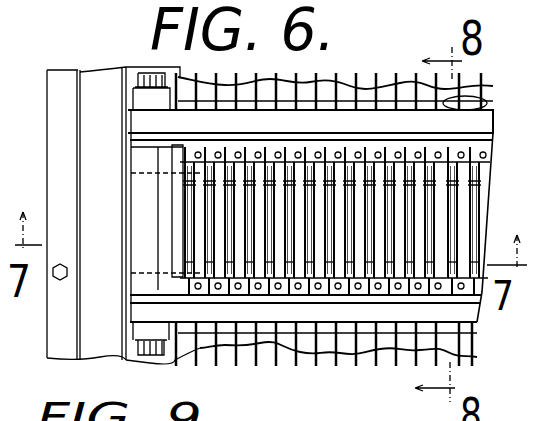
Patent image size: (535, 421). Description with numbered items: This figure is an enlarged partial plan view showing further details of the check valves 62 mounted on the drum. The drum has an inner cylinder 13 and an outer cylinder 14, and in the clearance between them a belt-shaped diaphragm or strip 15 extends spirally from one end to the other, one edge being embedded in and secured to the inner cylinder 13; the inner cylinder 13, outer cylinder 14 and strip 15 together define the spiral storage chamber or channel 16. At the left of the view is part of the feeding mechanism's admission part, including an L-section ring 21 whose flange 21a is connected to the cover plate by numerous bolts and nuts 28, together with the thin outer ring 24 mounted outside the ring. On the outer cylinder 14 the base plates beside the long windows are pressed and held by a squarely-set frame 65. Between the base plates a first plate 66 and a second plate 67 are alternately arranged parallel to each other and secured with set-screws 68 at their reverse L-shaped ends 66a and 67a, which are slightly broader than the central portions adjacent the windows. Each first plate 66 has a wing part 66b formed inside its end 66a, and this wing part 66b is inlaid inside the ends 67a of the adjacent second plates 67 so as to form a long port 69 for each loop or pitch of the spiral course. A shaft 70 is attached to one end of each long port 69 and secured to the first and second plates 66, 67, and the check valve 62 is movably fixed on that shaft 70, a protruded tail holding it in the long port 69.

The L-section ring 21 is at (78, 97).
The flange of L-section ring 21a is at (48, 128).
The thin outer ring 24 is at (93, 77).
The storage chamber or channel 16 is at (300, 88).
The outer cylinder 14 is at (347, 103).
The inner cylinder 13 is at (467, 90).
The belt-shaped diaphragm or strip 15 is at (448, 102).
The squarely-set frame 65 is at (383, 118).
The reverse L-shaped end of first plate 66a is at (199, 150).
The reverse L-shaped end of second plate 67a is at (227, 152).
The set-screw 68 is at (196, 152).
The first plate 66 is at (202, 196).
The wing part 66b is at (210, 174).
The second plate 67 is at (218, 217).
The shaft 70 is at (485, 178).
The check valve 62 is at (449, 220).
The long port 69 is at (456, 250).
The bolts and nuts 28 is at (59, 284).